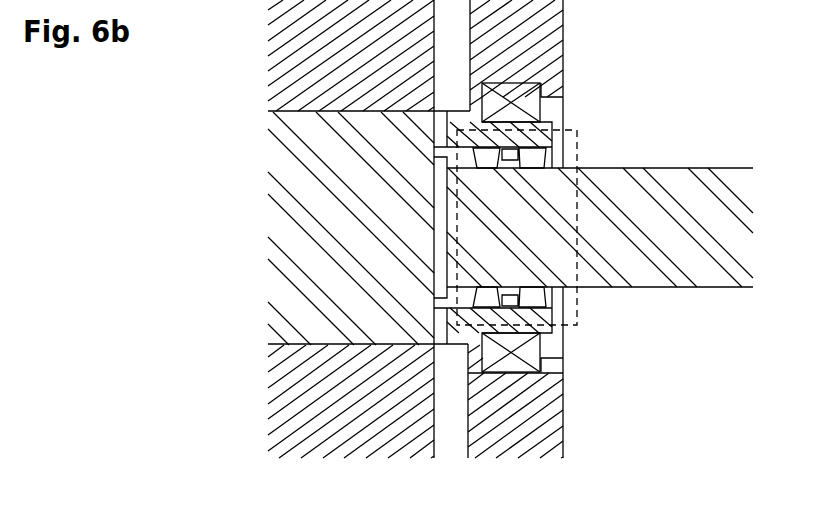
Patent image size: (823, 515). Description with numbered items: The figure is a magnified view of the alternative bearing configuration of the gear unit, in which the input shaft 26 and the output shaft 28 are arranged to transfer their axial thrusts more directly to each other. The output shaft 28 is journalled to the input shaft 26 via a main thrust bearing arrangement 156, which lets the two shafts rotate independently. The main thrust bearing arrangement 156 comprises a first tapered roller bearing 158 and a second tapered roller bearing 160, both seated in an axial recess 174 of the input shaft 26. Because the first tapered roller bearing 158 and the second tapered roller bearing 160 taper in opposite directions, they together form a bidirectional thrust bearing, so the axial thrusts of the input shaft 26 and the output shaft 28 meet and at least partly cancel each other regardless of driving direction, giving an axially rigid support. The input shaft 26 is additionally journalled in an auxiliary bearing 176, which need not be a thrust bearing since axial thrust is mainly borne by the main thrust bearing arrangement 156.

The input shaft 26 is at (292, 284).
The output shaft 28 is at (680, 187).
The main thrust bearing arrangement 156 is at (577, 132).
The first tapered roller bearing 158 is at (547, 347).
The second tapered roller bearing 160 is at (565, 300).
The axial recess 174 is at (440, 190).
The auxiliary bearing 176 is at (482, 107).